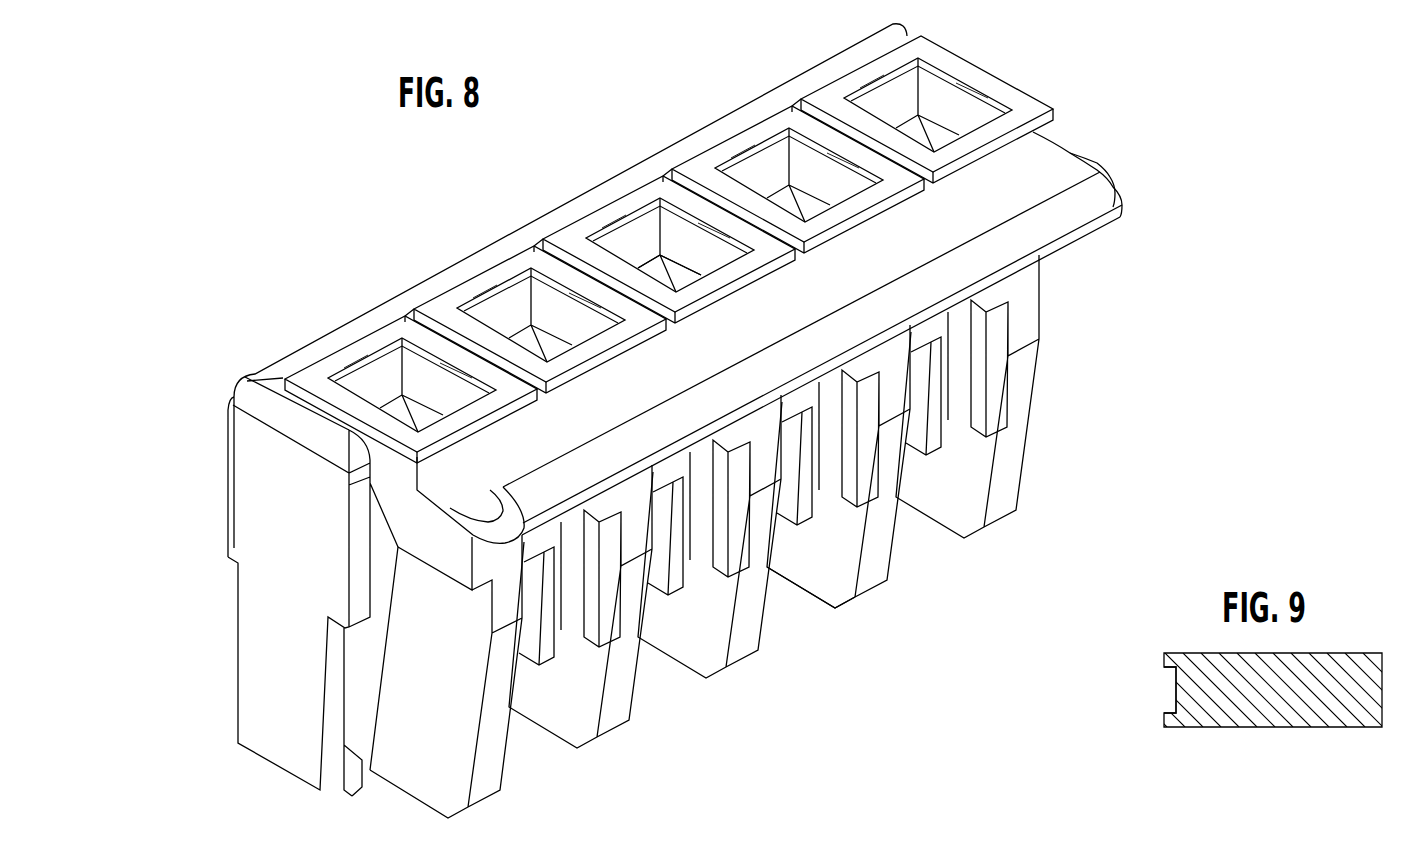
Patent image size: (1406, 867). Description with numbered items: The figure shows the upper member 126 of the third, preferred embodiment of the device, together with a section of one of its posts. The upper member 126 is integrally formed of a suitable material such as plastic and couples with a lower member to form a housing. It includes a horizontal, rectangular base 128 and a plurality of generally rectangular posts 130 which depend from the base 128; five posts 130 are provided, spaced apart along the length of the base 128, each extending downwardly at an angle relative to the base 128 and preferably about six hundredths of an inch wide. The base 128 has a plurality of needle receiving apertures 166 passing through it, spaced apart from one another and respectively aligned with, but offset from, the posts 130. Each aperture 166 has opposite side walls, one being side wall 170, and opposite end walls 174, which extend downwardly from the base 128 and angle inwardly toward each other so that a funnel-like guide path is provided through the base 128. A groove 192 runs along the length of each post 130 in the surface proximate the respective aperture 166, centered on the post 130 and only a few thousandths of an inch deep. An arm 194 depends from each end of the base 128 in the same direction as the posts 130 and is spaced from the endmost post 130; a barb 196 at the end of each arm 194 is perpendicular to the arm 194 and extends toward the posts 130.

In FIG. 8, the upper member 126 is at (1010, 531).
In FIG. 8, the horizontal base 128 is at (1020, 197).
In FIG. 8, the post 130 is at (1018, 442).
In FIG. 9, the post 130 is at (1265, 715).
In FIG. 8, the needle receiving aperture 166 is at (387, 370).
In FIG. 8, the side wall 170 is at (620, 245).
In FIG. 8, the end wall 174 is at (690, 238).
In FIG. 9, the groove 192 is at (1170, 692).
In FIG. 8, the arm 194 is at (295, 755).
In FIG. 8, the barb 196 is at (357, 770).